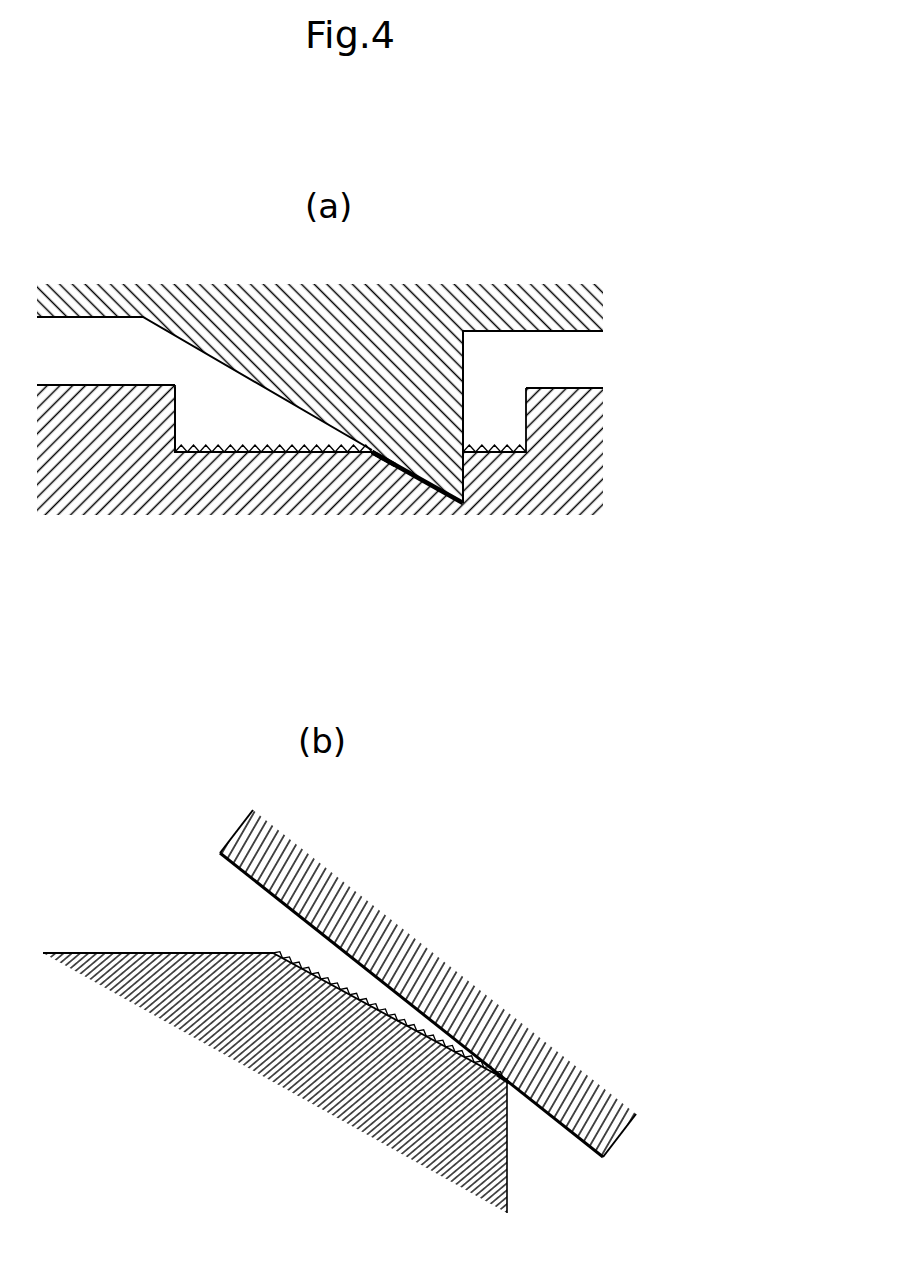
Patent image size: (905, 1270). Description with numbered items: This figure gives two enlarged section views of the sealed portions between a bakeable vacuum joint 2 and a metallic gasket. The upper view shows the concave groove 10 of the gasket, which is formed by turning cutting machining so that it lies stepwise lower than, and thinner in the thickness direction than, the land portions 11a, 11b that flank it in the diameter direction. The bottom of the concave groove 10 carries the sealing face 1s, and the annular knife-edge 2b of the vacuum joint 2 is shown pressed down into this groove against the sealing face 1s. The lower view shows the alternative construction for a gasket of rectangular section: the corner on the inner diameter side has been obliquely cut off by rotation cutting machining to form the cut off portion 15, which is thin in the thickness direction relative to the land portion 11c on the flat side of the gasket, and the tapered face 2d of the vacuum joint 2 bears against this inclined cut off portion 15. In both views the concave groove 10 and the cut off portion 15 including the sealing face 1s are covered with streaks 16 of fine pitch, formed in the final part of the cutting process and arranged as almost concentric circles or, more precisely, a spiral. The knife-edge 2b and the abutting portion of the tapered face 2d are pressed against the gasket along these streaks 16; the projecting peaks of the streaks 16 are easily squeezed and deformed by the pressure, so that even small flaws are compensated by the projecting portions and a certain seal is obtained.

The vacuum joint 2 is at (555, 297).
The knife-edge 2b is at (445, 490).
The tapered face 2d is at (268, 896).
The sealing face 1s is at (398, 451).
The concave groove 10 is at (202, 447).
The land portion 11a is at (100, 385).
The land portion 11b is at (590, 385).
The land portion 11c is at (97, 953).
The cut off portion 15 is at (447, 1033).
The streaks 16 is at (288, 446).